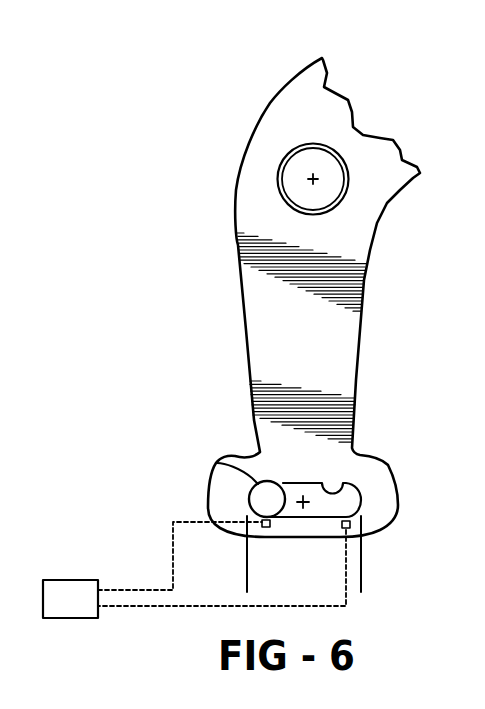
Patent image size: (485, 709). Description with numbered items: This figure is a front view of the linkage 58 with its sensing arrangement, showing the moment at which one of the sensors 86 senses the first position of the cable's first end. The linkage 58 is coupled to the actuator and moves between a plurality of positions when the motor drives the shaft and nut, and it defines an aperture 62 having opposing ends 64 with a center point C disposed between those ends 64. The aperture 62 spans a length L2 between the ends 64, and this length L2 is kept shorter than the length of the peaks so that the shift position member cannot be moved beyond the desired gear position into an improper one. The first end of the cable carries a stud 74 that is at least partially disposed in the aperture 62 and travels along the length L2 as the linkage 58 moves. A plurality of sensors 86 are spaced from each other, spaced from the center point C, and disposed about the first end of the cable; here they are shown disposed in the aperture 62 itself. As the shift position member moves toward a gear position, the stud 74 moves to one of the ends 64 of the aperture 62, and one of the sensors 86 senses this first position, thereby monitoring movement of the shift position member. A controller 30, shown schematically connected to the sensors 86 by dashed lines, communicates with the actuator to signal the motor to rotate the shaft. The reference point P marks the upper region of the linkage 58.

The linkage 58 is at (353, 227).
The proximal reference point P is at (315, 178).
The stud 74 is at (218, 462).
The aperture 62 is at (334, 492).
The opposing ends 64 is at (252, 507).
The center point C is at (301, 500).
The sensors 86 is at (265, 527).
The length of the aperture L2 is at (361, 582).
The controller 30 is at (68, 580).